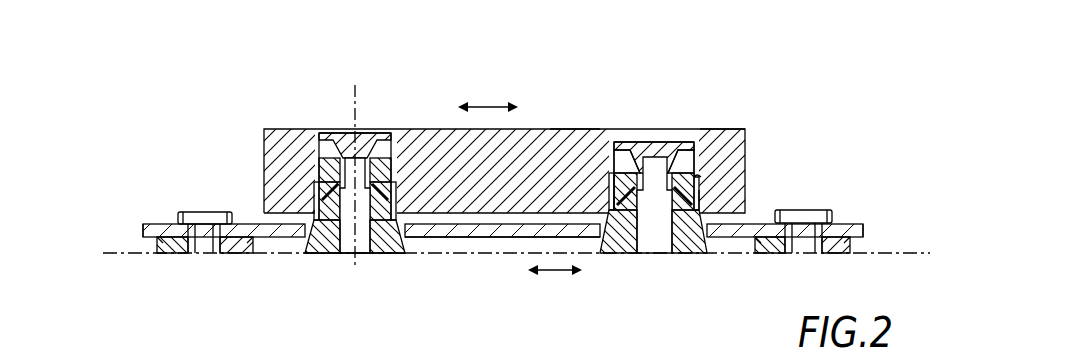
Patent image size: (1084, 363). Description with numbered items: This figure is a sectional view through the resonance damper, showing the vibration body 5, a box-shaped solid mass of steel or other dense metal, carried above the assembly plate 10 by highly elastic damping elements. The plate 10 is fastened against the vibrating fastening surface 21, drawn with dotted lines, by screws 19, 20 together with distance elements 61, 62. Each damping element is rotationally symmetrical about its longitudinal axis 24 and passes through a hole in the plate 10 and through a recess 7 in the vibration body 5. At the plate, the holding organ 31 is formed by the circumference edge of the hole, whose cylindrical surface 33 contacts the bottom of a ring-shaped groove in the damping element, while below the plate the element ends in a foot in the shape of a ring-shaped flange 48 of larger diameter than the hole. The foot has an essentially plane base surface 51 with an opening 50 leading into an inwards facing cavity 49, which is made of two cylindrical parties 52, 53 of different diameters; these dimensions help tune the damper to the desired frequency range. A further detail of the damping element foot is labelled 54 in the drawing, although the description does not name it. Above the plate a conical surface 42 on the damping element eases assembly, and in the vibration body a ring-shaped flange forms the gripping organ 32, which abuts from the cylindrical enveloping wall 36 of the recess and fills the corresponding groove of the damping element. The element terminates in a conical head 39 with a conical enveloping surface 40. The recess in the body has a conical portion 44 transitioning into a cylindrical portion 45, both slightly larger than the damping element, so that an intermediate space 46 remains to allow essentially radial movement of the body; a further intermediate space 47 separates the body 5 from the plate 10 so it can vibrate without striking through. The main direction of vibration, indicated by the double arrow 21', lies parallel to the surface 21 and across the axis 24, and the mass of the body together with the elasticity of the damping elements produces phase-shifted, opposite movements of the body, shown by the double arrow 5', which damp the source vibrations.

The vibration body 5 is at (504, 123).
The double arrow indicating vibration body movement 5' is at (485, 73).
The longitudinal axis 24 is at (349, 127).
The cylindrical party of cavity 53 is at (347, 167).
The clamping tab 54 is at (322, 202).
The cylindrical party of cavity 52 is at (335, 192).
The opening 50 is at (343, 256).
The ring-shaped flange 48 is at (314, 246).
The cavity 49 is at (368, 256).
The base surface 51 is at (322, 256).
The conical surface 42 is at (553, 136).
The intermediate space 46 is at (587, 137).
The gripping organ 32 is at (608, 135).
The enveloping wall 36 is at (656, 136).
The conical head 39 is at (673, 137).
The recess 7 is at (683, 150).
The conical enveloping surface 40 is at (733, 130).
The cylindrical portion 45 is at (699, 155).
The conical portion 44 is at (704, 200).
The holding organ 31 is at (613, 250).
The cylindrical surface 33 is at (684, 250).
The assembly plate 10 is at (470, 226).
The intermediate space 47 is at (526, 226).
The screw 19 is at (240, 220).
The screw 20 is at (790, 211).
The fastening surface 21 is at (516, 287).
The double arrow indicating main direction of vibration 21' is at (555, 304).
The distance element 61 is at (850, 240).
The distance element 62 is at (157, 243).